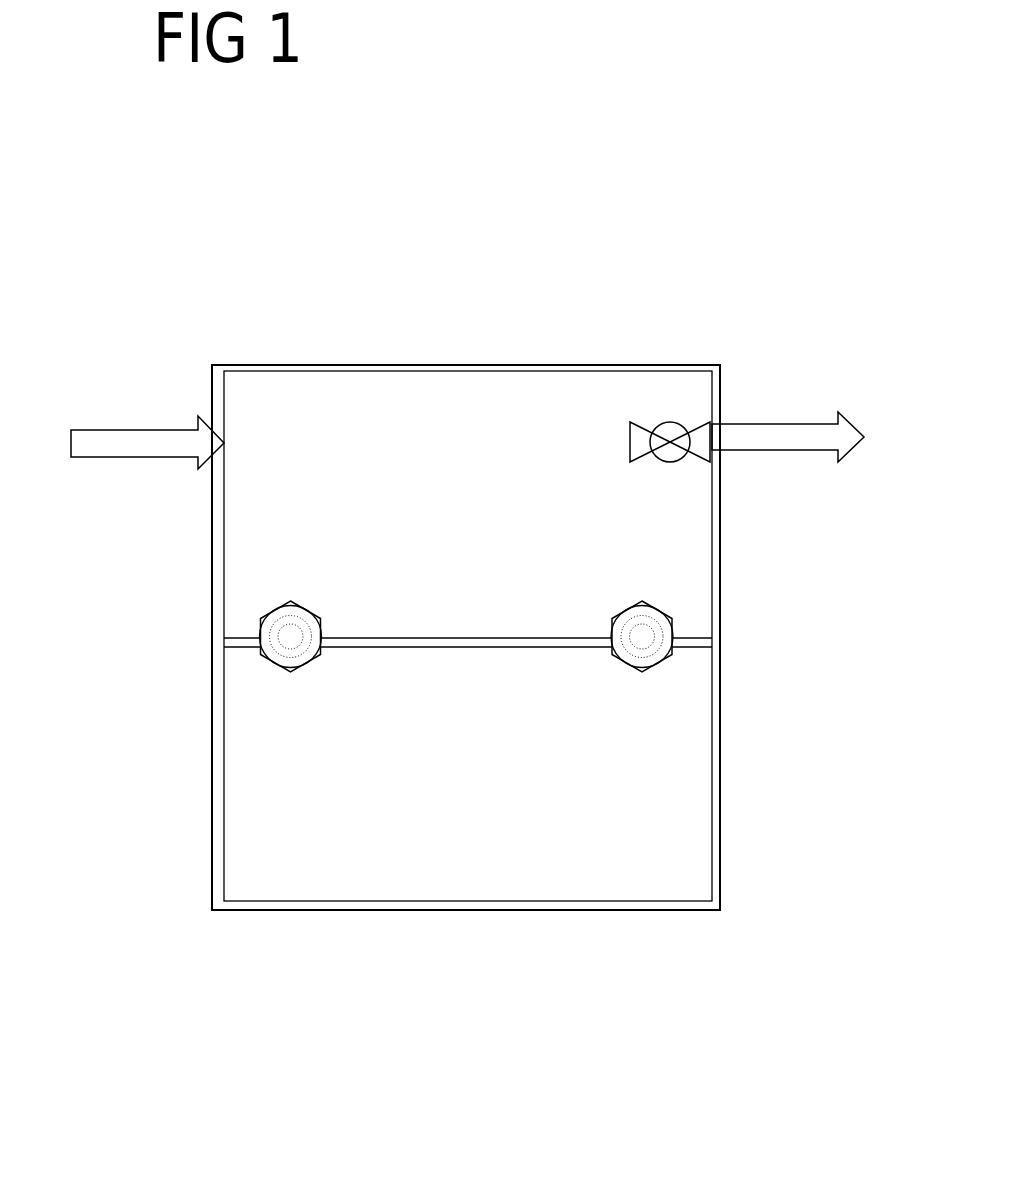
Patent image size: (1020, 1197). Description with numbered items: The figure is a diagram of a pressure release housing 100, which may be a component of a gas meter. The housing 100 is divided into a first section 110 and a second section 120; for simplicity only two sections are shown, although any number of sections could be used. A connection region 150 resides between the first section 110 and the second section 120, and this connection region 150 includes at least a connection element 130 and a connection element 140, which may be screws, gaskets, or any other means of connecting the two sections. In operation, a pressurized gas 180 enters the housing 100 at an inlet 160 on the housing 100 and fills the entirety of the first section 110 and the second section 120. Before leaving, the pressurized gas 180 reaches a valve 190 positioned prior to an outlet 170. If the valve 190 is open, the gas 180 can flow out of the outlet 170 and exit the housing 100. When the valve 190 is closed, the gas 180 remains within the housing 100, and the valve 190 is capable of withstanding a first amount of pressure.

The pressure release housing 100 is at (519, 362).
The first section 110 is at (466, 433).
The second section 120 is at (486, 864).
The connection element 130 is at (291, 676).
The connection element 140 is at (643, 677).
The connection region 150 is at (724, 622).
The inlet 160 is at (147, 415).
The outlet 170 is at (788, 415).
The pressurized gas 180 is at (527, 806).
The valve 190 is at (670, 475).